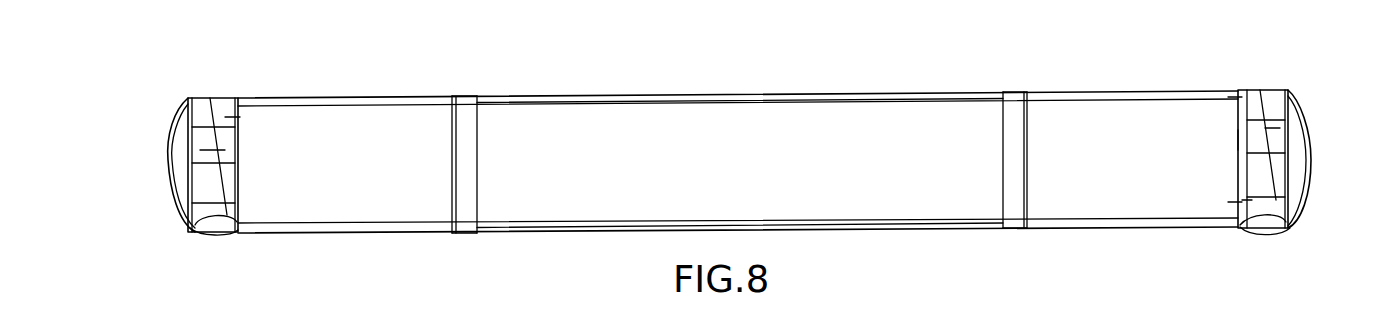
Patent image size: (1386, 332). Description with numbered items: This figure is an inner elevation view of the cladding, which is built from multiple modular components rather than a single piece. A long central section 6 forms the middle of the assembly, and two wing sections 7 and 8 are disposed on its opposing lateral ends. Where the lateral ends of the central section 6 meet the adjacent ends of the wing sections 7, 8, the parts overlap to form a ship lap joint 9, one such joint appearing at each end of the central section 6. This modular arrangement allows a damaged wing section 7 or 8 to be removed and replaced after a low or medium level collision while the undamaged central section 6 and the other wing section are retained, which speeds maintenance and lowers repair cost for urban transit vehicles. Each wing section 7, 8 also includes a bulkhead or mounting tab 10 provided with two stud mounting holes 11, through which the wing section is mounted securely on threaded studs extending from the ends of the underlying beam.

The central section 6 is at (783, 93).
The wing section 7 is at (330, 95).
The wing section 8 is at (1137, 87).
The ship lap joint 9 is at (468, 92).
The bulkhead or mounting tab 10 is at (1240, 142).
The stud mounting holes 11 is at (1273, 138).